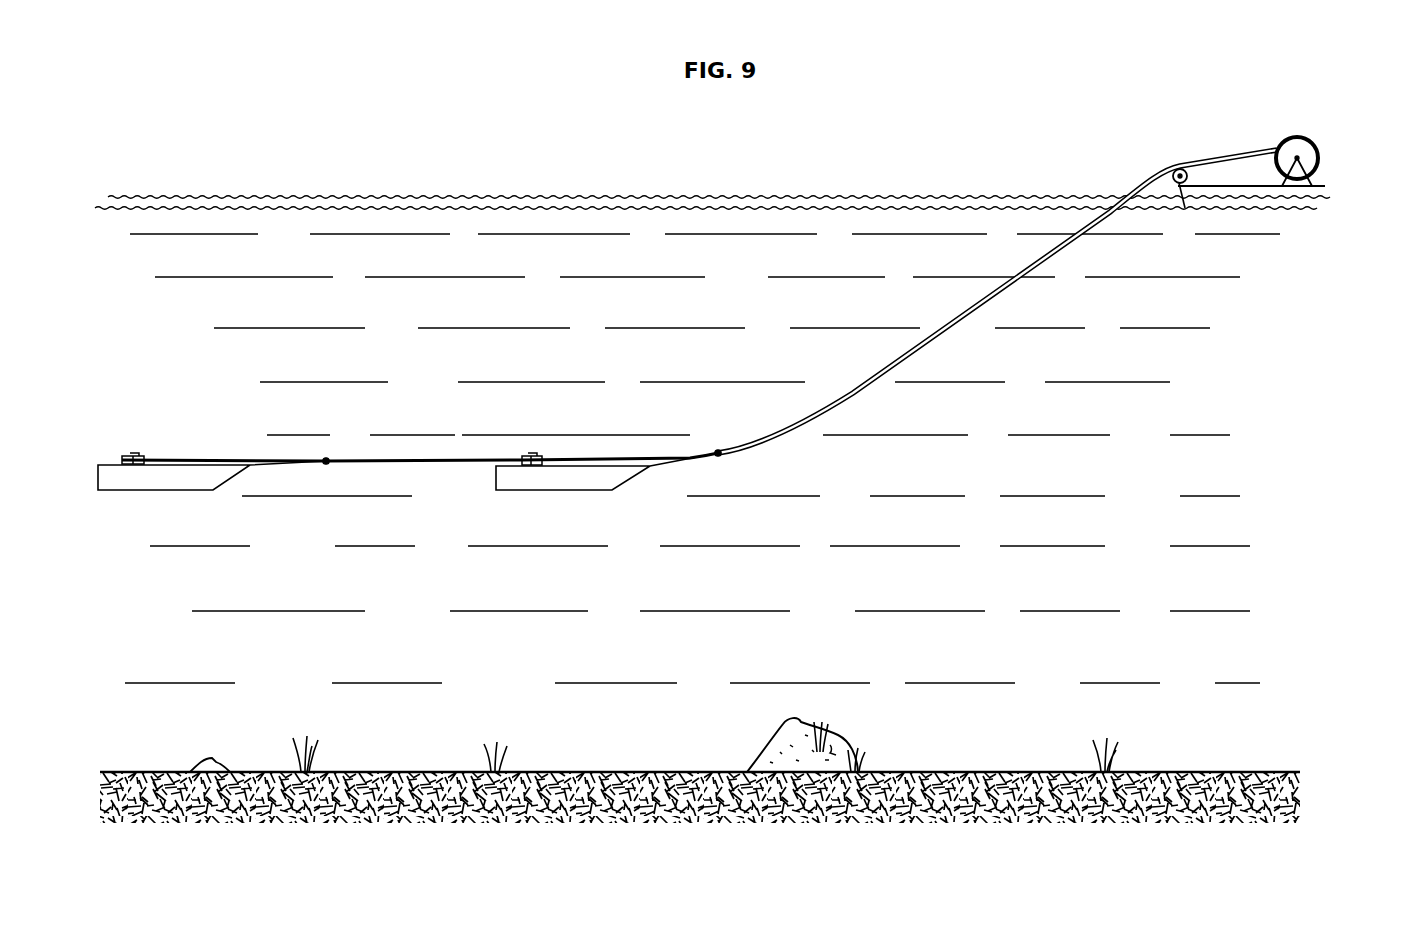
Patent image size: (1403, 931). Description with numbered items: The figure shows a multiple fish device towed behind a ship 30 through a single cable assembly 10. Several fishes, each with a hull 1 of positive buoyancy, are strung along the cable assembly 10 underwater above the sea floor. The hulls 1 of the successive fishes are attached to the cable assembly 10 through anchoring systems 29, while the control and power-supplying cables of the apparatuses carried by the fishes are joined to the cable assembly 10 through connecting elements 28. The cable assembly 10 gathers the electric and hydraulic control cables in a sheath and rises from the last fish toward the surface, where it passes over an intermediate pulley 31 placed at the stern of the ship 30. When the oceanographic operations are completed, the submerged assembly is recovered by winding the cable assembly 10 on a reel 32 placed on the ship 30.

The hull 1 is at (165, 478).
The cable assembly 10 is at (856, 391).
The connecting element 28 is at (134, 456).
The anchoring system 29 is at (328, 458).
The ship 30 is at (1213, 197).
The intermediate pulley 31 is at (1173, 169).
The reel 32 is at (1303, 152).